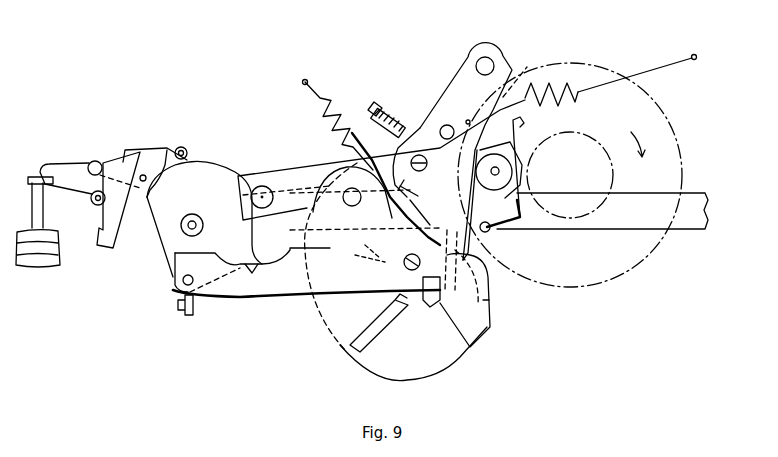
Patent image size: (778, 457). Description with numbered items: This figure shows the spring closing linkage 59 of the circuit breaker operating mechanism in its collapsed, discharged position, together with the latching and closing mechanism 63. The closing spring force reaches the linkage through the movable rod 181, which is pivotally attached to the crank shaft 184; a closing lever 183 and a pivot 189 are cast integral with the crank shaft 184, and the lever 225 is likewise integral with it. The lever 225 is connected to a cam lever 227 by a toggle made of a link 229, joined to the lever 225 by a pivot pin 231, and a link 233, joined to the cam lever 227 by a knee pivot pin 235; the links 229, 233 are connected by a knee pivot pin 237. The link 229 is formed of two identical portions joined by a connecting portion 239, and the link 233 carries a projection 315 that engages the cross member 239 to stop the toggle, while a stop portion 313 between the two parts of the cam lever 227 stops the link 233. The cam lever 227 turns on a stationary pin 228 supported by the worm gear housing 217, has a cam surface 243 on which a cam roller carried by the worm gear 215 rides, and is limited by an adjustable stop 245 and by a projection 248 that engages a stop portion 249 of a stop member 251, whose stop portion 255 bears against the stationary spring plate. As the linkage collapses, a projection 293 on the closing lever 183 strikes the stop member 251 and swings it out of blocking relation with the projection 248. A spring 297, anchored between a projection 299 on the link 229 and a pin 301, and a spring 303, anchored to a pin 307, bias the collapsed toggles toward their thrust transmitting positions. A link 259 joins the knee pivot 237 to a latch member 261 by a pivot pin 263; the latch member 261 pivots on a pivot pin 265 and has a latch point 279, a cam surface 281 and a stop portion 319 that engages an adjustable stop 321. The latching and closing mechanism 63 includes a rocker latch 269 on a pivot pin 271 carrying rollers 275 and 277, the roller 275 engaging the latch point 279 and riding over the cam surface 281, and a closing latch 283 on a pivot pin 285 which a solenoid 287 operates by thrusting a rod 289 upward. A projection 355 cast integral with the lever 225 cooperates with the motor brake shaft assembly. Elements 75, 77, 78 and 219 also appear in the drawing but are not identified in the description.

The spring closing linkage 59 is at (549, 331).
The latching and closing mechanism 63 is at (114, 138).
The pivot pin 75 is at (271, 191).
The link plate 77 is at (302, 170).
The lever 78 is at (385, 165).
The movable rod 181 is at (688, 222).
The closing lever 183 is at (489, 275).
The crank shaft 184 is at (498, 373).
The pivot 189 is at (489, 304).
The worm gear 215 is at (660, 105).
The housing 217 is at (388, 107).
The hub 219 is at (574, 136).
The lever 225 is at (365, 368).
The cam lever 227 is at (462, 78).
The pin 228 is at (490, 57).
The link 229 is at (343, 197).
The pivot pin 231 is at (345, 205).
The link 233 is at (412, 184).
The knee pivot pin 235 is at (418, 154).
The knee pivot pin 237 is at (390, 296).
The connecting portion 239 is at (372, 259).
The cam surface 243 is at (521, 72).
The adjustable stop 245 is at (368, 108).
The projection 248 is at (445, 124).
The stop portion 249 is at (468, 120).
The stop member 251 is at (551, 226).
The stop portion 255 is at (522, 121).
The link 259 is at (248, 296).
The latch member 261 is at (163, 247).
The pivot pin 263 is at (182, 279).
The pivot pin 265 is at (191, 214).
The rocker latch 269 is at (148, 150).
The pivot pin 271 is at (150, 167).
The roller 275 is at (183, 147).
The roller 277 is at (92, 161).
The latch point 279 is at (147, 199).
The cam surface 281 is at (215, 166).
The closing latch 283 is at (48, 165).
The pivot pin 285 is at (91, 199).
The solenoid 287 is at (60, 291).
The rod 289 is at (44, 213).
The projection 293 is at (491, 230).
The spring 297 is at (325, 124).
The projection 299 is at (372, 272).
The pin 301 is at (302, 82).
The spring 303 is at (572, 92).
The pin 307 is at (693, 54).
The stop portion 313 is at (420, 212).
The projection 315 is at (434, 308).
The stop portion 319 is at (262, 262).
The adjustable stop 321 is at (188, 316).
The projection 355 is at (388, 318).